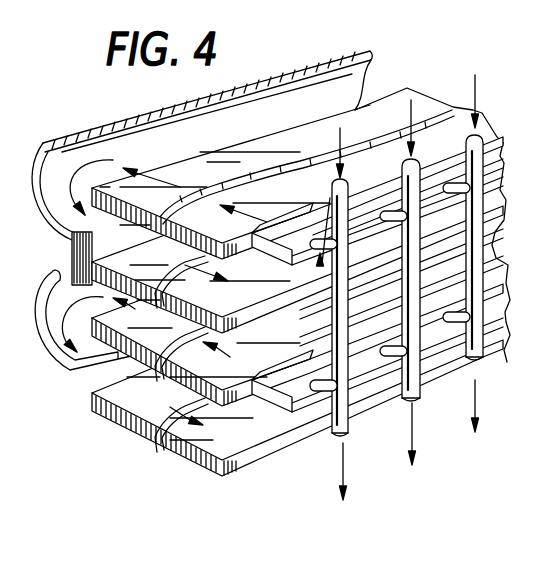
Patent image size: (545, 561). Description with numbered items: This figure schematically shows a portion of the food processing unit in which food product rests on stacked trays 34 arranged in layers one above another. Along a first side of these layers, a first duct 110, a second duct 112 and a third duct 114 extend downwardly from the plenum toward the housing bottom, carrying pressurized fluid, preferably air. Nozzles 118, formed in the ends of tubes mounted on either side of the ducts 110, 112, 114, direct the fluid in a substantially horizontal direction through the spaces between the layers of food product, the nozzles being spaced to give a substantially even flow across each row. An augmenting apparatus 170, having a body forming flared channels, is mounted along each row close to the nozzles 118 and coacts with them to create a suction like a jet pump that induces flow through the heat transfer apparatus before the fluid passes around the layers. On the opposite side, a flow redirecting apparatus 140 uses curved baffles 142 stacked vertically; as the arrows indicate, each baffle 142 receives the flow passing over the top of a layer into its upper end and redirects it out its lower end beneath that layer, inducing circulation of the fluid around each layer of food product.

The trays 34 is at (63, 279).
The first duct 110 is at (472, 362).
The second duct 112 is at (412, 402).
The third duct 114 is at (339, 437).
The nozzles 118 is at (462, 183).
The flow redirecting apparatus 140 is at (168, 104).
The curved baffles 142 is at (45, 143).
The augmenting apparatus 170 is at (305, 210).